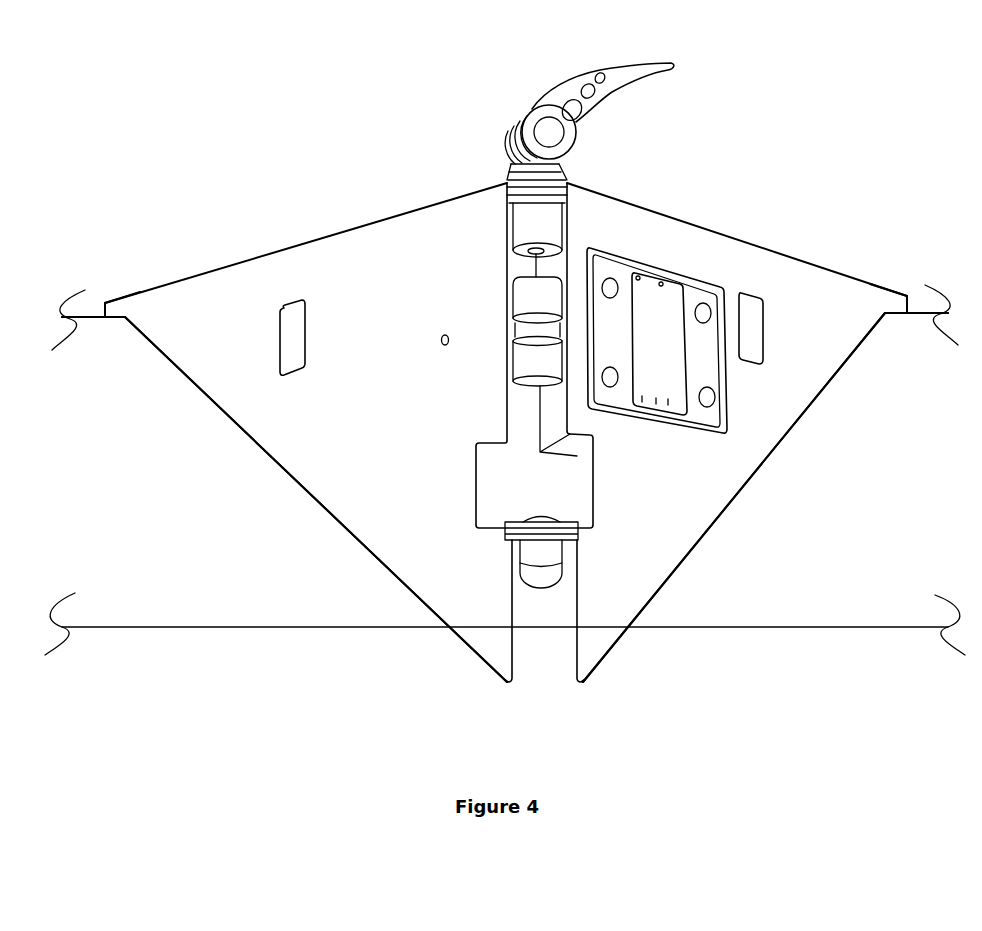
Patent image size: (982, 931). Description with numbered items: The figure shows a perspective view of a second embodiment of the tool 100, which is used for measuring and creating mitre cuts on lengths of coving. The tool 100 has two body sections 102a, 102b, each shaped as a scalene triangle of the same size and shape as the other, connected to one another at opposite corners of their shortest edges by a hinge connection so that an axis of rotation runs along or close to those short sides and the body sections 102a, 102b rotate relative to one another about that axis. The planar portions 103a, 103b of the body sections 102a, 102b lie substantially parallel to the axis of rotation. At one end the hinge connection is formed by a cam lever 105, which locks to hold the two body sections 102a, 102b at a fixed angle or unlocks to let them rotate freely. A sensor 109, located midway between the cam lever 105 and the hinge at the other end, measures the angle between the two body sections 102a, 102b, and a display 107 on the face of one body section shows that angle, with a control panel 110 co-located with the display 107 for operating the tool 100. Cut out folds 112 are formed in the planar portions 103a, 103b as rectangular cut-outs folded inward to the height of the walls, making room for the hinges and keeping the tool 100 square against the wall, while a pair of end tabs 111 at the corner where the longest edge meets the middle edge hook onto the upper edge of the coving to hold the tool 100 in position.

The tool 100 is at (305, 145).
The body section 102a is at (193, 461).
The body section 102b is at (770, 493).
The planar portion 103a is at (327, 460).
The planar portion 103b is at (660, 545).
The cam lever 105 is at (510, 125).
The display 107 is at (661, 345).
The sensor 109 is at (535, 335).
The control panel 110 is at (727, 404).
The end tabs 111 is at (123, 298).
The cut out folds 112 is at (287, 347).